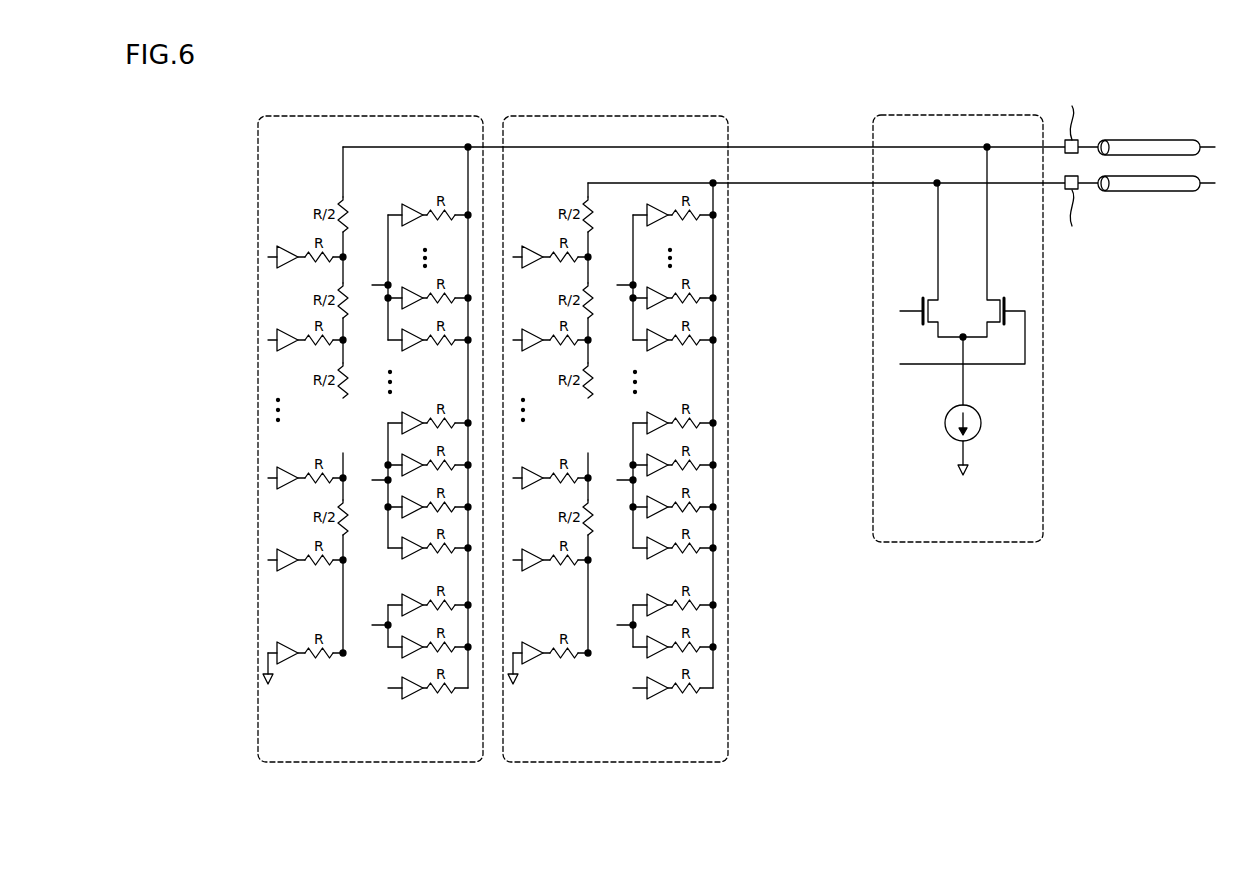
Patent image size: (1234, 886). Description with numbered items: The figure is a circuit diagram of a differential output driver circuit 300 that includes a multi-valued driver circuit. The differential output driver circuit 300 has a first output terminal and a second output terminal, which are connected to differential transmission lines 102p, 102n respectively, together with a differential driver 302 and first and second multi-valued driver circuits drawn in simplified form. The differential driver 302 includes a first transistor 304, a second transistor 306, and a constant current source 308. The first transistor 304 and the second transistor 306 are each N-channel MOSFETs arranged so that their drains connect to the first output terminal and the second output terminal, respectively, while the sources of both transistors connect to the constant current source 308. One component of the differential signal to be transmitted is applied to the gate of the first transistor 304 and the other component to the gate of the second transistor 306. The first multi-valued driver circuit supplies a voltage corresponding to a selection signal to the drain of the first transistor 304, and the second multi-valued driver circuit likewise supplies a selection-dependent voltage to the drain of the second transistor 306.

The differential output driver circuit 300 is at (736, 442).
The differential driver 302 is at (958, 310).
The first transistor 304 is at (993, 297).
The second transistor 306 is at (932, 297).
The constant current source 308 is at (985, 421).
The differential transmission line 102p is at (1138, 140).
The differential transmission line 102n is at (1150, 191).